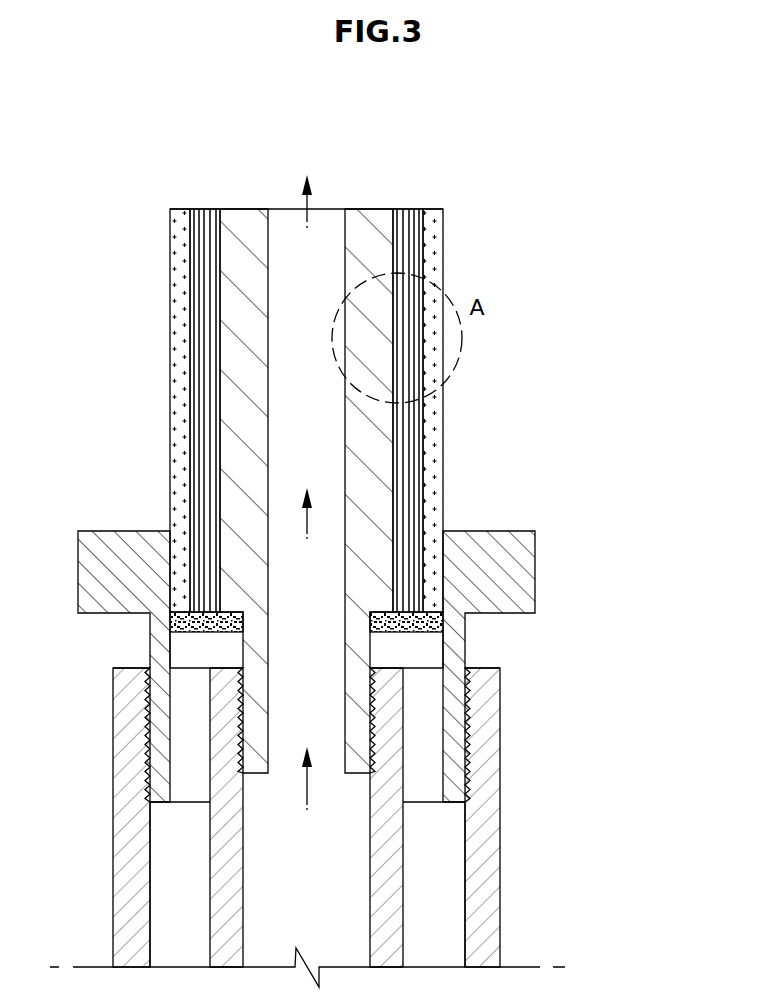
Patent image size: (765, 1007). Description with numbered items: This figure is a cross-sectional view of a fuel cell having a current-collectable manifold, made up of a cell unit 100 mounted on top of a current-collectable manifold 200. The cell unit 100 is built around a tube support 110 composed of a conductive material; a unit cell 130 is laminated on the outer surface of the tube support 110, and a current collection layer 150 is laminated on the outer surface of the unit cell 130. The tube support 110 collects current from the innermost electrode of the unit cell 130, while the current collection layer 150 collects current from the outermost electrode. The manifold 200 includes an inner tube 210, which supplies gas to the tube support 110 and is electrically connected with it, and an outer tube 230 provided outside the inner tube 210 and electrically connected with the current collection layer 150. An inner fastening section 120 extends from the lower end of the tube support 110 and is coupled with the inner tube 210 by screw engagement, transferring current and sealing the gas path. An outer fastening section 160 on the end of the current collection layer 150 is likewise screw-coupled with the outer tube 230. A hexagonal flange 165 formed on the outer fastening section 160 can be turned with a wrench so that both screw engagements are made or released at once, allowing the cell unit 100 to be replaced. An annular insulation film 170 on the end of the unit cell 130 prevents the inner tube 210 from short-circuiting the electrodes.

The cell unit 100 is at (339, 433).
The tube support 110 is at (372, 226).
The inner fastening section 120 is at (357, 722).
The unit cell 130 is at (419, 215).
The current collection layer 150 is at (365, 140).
The outer fastening section 160 is at (455, 695).
The hexagonal flange 165 is at (513, 573).
The insulation film 170 is at (465, 617).
The current-collectable manifold 200 is at (415, 817).
The inner tube 210 is at (392, 913).
The outer tube 230 is at (485, 845).